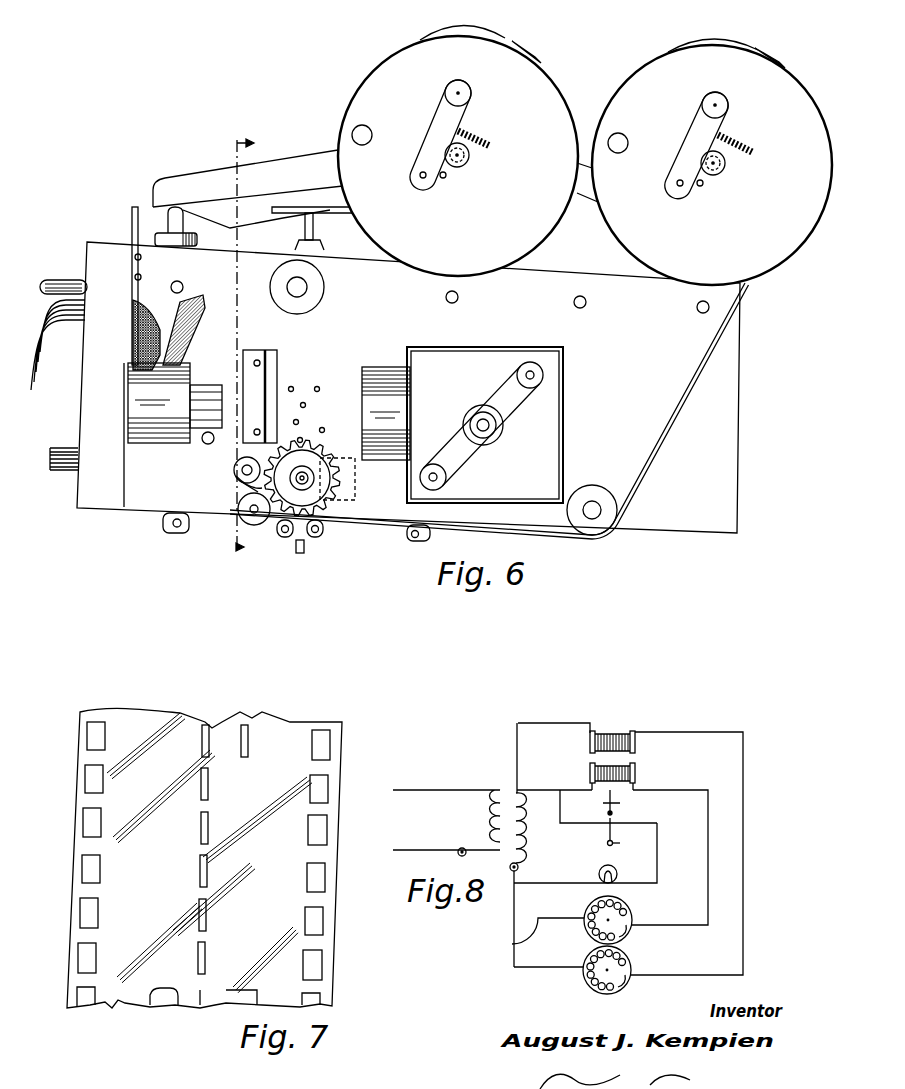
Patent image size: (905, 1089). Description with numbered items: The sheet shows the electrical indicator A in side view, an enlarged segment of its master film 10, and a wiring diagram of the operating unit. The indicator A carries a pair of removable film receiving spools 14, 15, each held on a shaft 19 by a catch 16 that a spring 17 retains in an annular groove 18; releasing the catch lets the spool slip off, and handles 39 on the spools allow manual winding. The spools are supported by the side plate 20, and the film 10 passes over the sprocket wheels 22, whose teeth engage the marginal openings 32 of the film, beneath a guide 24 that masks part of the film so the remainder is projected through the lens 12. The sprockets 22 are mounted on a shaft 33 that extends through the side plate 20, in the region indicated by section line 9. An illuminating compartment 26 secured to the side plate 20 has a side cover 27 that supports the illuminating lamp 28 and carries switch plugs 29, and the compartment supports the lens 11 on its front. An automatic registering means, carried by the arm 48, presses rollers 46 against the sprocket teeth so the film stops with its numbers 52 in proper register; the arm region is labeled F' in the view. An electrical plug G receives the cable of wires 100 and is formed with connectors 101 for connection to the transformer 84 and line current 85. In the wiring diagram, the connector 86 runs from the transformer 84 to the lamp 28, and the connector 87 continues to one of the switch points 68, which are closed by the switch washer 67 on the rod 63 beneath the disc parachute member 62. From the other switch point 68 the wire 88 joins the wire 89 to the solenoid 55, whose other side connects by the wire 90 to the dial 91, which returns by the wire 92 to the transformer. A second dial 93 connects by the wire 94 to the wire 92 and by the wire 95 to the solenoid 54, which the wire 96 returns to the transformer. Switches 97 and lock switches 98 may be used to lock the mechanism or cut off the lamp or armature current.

In FIG. 6, the section line 9- 9 is at (236, 349).
In FIG. 6, the indicator A is at (308, 155).
In FIG. 8, the indicator A is at (710, 731).
In FIG. 6, the electrical plug G is at (130, 297).
In FIG. 6, the cable of wires 100 is at (203, 300).
In FIG. 6, the connectors 101 is at (62, 370).
In FIG. 6, the lens 12 is at (190, 365).
In FIG. 6, the guide 24 is at (267, 378).
In FIG. 6, the lens 11 is at (392, 370).
In FIG. 6, the shaft 33 is at (322, 456).
In FIG. 6, the sprocket wheels 22 is at (305, 452).
In FIG. 6, the switch plugs 29 is at (543, 374).
In FIG. 6, the illuminating compartment 26 is at (537, 422).
In FIG. 6, the side cover 27 is at (525, 460).
In FIG. 6, the master film 10 is at (712, 360).
In FIG. 7, the master film 10 is at (297, 733).
In FIG. 6, the side plate 20 is at (722, 403).
In FIG. 6, the roller arm F' is at (217, 472).
In FIG. 6, the arm 48 is at (243, 488).
In FIG. 6, the rollers 46 is at (257, 517).
In FIG. 6, the film receiving spool 15 is at (542, 88).
In FIG. 6, the film receiving spool 14 is at (658, 73).
In FIG. 6, the handles 39 is at (366, 130).
In FIG. 6, the catch 16 is at (455, 116).
In FIG. 6, the spring 17 is at (487, 135).
In FIG. 6, the annular groove 18 is at (463, 163).
In FIG. 6, the shaft 19 is at (456, 167).
In FIG. 7, the numbers 52 is at (252, 770).
In FIG. 7, the marginal openings 32 is at (87, 783).
In FIG. 8, the wire 96 is at (548, 723).
In FIG. 8, the solenoid 54 is at (613, 733).
In FIG. 8, the solenoid 55 is at (637, 772).
In FIG. 8, the wire 95 is at (710, 975).
In FIG. 8, the wire 89 is at (551, 790).
In FIG. 8, the wire 90 is at (692, 790).
In FIG. 8, the transformer 84 is at (505, 795).
In FIG. 8, the line current 85 is at (437, 848).
In FIG. 8, the lock switch 98 is at (468, 855).
In FIG. 8, the wire 88 is at (560, 824).
In FIG. 8, the connector 87 is at (657, 858).
In FIG. 8, the connector 86 is at (548, 883).
In FIG. 8, the disc parachute member 62 is at (620, 803).
In FIG. 8, the switch washer 67 is at (605, 812).
In FIG. 8, the switch points 68 is at (622, 824).
In FIG. 8, the rod 63 is at (628, 842).
In FIG. 8, the illuminating lamp 28 is at (616, 870).
In FIG. 8, the switch 97 is at (580, 882).
In FIG. 8, the wire 92 is at (510, 908).
In FIG. 8, the dial 91 is at (633, 930).
In FIG. 8, the dial 93 is at (631, 958).
In FIG. 8, the wire 94 is at (563, 968).